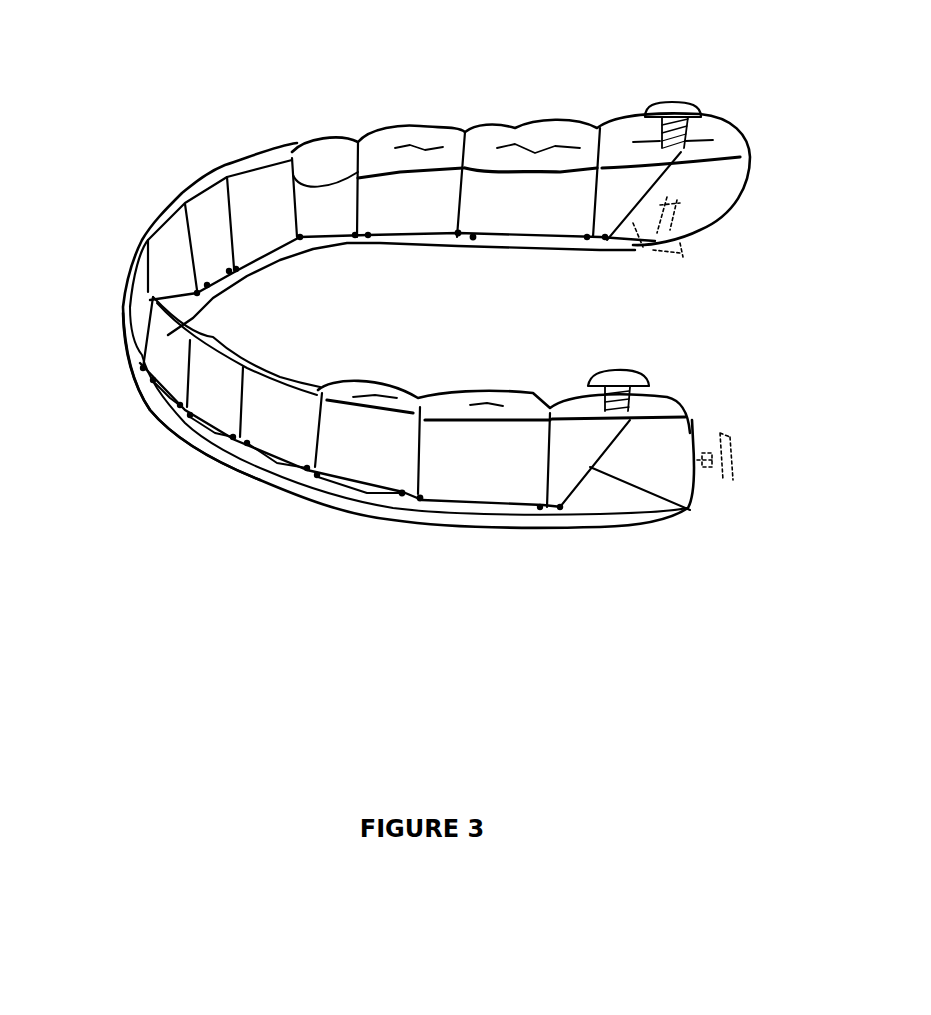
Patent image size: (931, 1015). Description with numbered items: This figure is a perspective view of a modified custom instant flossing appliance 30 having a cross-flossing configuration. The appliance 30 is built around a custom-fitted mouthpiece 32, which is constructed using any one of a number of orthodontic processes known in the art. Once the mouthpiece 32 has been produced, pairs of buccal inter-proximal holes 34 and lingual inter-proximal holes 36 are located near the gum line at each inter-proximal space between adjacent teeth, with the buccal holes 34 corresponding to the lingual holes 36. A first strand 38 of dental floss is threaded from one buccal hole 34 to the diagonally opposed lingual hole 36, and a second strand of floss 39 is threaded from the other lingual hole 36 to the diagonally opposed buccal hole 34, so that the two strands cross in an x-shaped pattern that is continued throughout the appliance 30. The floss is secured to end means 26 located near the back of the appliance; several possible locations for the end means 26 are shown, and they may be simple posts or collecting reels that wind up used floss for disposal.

The custom instant flossing appliance 30 is at (210, 127).
The custom-fitted mouthpiece 32 is at (231, 448).
The buccal inter-proximal holes 34 is at (432, 510).
The lingual inter-proximal holes 36 is at (453, 243).
The first strand of dental floss 38 is at (690, 510).
The second strand of floss 39 is at (640, 243).
The end means 26 is at (683, 257).